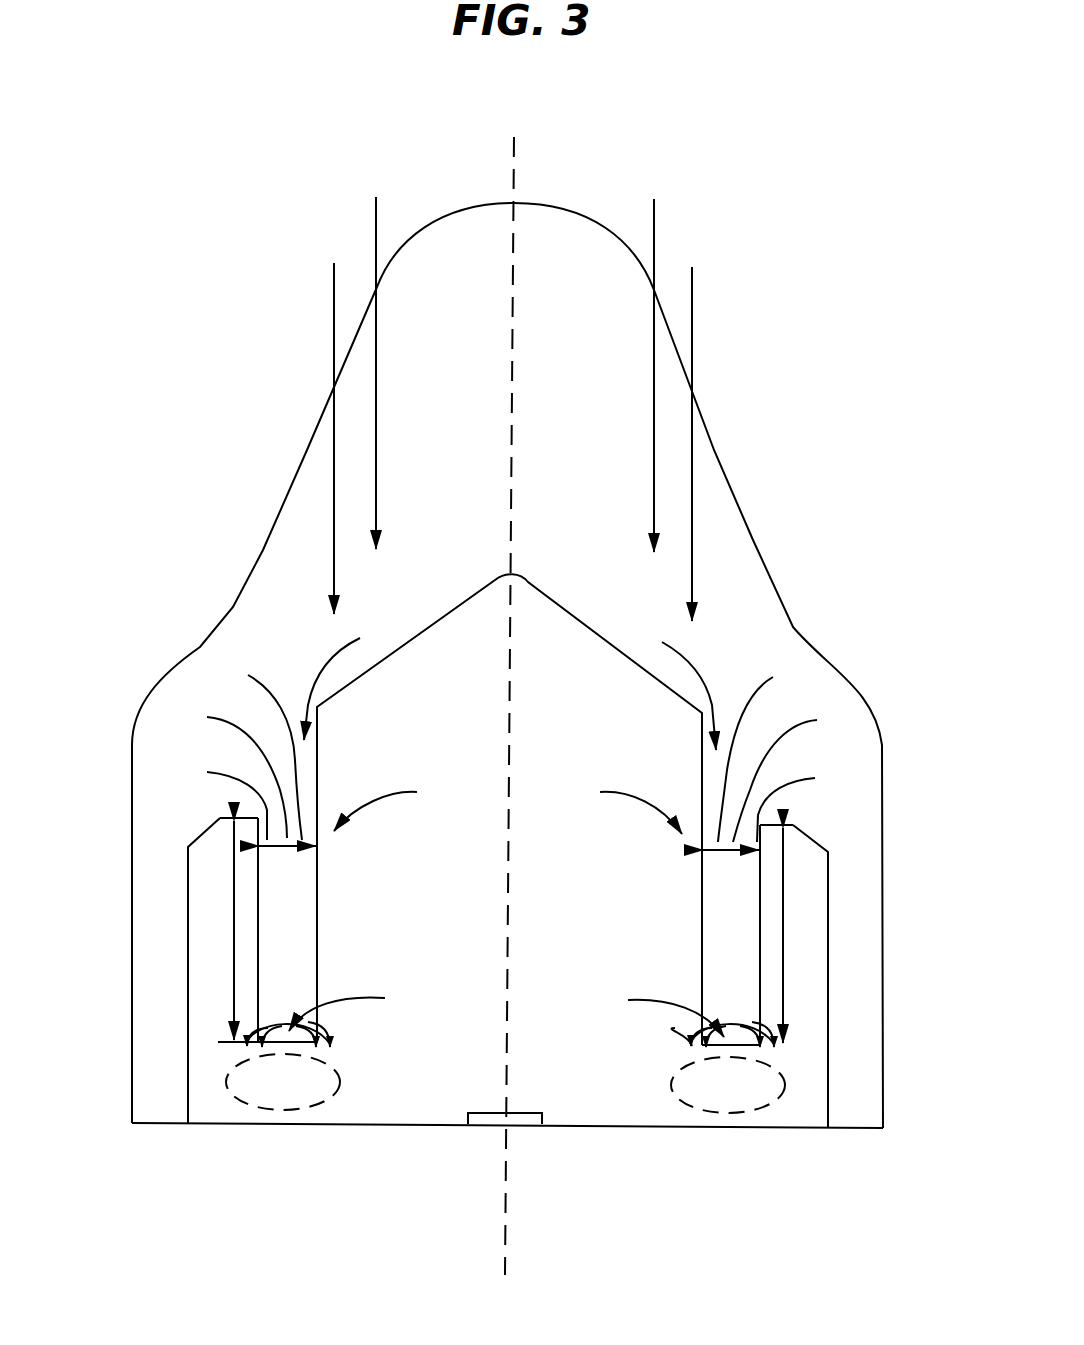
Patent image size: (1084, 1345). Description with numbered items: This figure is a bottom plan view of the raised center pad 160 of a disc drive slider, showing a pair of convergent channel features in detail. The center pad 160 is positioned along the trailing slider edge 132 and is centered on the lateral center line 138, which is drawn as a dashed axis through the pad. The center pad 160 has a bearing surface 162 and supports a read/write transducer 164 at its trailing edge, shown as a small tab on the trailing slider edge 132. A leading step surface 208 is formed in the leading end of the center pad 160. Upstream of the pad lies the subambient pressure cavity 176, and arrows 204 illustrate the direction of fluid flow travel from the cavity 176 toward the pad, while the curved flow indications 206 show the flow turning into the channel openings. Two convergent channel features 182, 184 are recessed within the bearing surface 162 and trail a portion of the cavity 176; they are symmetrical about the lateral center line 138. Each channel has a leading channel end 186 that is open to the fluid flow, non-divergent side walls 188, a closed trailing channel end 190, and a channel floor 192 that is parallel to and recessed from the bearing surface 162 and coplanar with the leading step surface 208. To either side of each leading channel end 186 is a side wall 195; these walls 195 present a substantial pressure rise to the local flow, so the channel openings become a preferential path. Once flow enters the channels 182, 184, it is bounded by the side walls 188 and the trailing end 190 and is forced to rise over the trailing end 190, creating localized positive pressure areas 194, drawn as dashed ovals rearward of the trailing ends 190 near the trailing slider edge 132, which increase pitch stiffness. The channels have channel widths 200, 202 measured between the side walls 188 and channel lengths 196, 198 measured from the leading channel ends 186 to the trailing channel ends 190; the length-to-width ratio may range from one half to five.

The trailing slider edge 132 is at (380, 1123).
The lateral center line 138 is at (505, 1230).
The raised center pad 160 is at (577, 188).
The bearing surface 162 is at (512, 665).
The read/write transducer 164 is at (475, 1126).
The subambient pressure cavity 176 is at (331, 138).
The convergent channel feature 182 is at (398, 806).
The convergent channel feature 184 is at (617, 808).
The leading channel end 186 is at (527, 745).
The non-divergent side walls 188 is at (702, 970).
The trailing channel end 190 is at (506, 1013).
The channel floor 192 is at (287, 912).
The localized positive pressure area 194 is at (248, 1102).
The side wall 195 is at (233, 818).
The channel length 196 is at (235, 931).
The channel length 198 is at (786, 935).
The channel width 200 is at (220, 772).
The channel width 202 is at (798, 777).
The arrows 204 is at (654, 452).
The deflected gas flow 206 is at (509, 683).
The leading step surface 208 is at (475, 260).